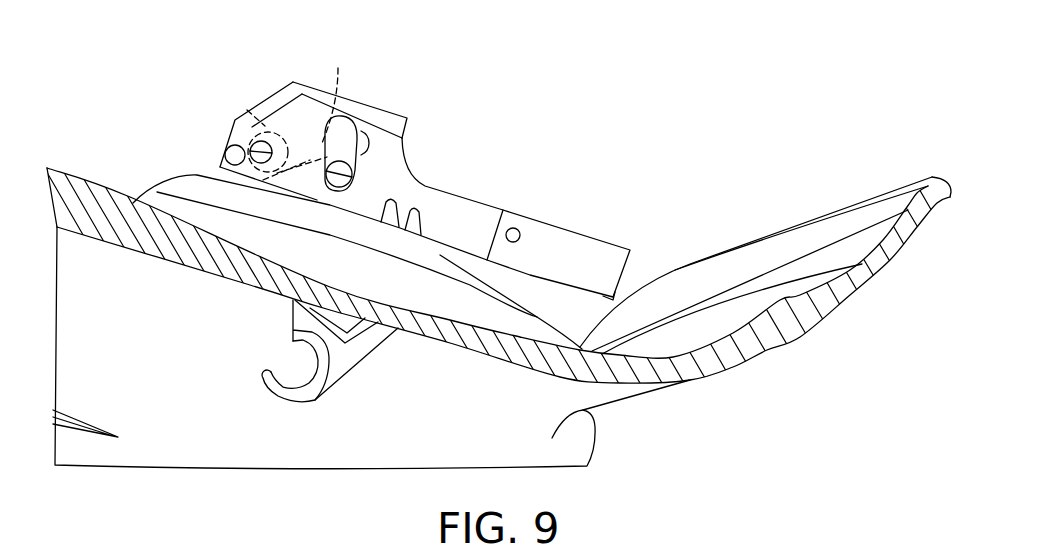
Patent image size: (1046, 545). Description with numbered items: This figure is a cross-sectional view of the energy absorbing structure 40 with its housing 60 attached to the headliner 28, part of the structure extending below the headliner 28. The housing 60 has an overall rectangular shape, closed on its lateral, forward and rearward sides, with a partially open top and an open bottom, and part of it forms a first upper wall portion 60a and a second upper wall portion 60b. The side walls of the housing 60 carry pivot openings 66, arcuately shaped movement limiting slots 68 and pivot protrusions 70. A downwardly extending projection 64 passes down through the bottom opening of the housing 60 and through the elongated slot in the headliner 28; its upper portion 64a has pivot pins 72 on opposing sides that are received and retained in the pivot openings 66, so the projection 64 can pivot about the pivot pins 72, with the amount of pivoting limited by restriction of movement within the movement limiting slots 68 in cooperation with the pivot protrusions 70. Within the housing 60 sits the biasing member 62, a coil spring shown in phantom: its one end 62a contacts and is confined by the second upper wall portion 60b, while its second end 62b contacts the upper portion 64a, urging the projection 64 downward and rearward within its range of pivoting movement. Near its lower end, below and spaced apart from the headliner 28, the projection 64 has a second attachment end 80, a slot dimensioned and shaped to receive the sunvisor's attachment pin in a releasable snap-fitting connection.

The headliner 28 is at (73, 203).
The energy absorbing structure 40 is at (251, 95).
The housing 60 is at (295, 112).
The first upper wall portion 60a is at (388, 111).
The second upper wall portion 60b is at (266, 93).
The biasing member 62 is at (299, 133).
The one end of the biasing member 62a is at (247, 110).
The second end of the biasing member 62b is at (338, 68).
The downwardly extending projection 64 is at (325, 318).
The upper portion of the downwardly extending projection 64a is at (300, 193).
The pivot openings 66 is at (244, 150).
The movement limiting slots 68 is at (368, 147).
The pivot protrusions 70 is at (336, 175).
The pivot pins 72 is at (256, 163).
The second attachment end 80 is at (320, 369).